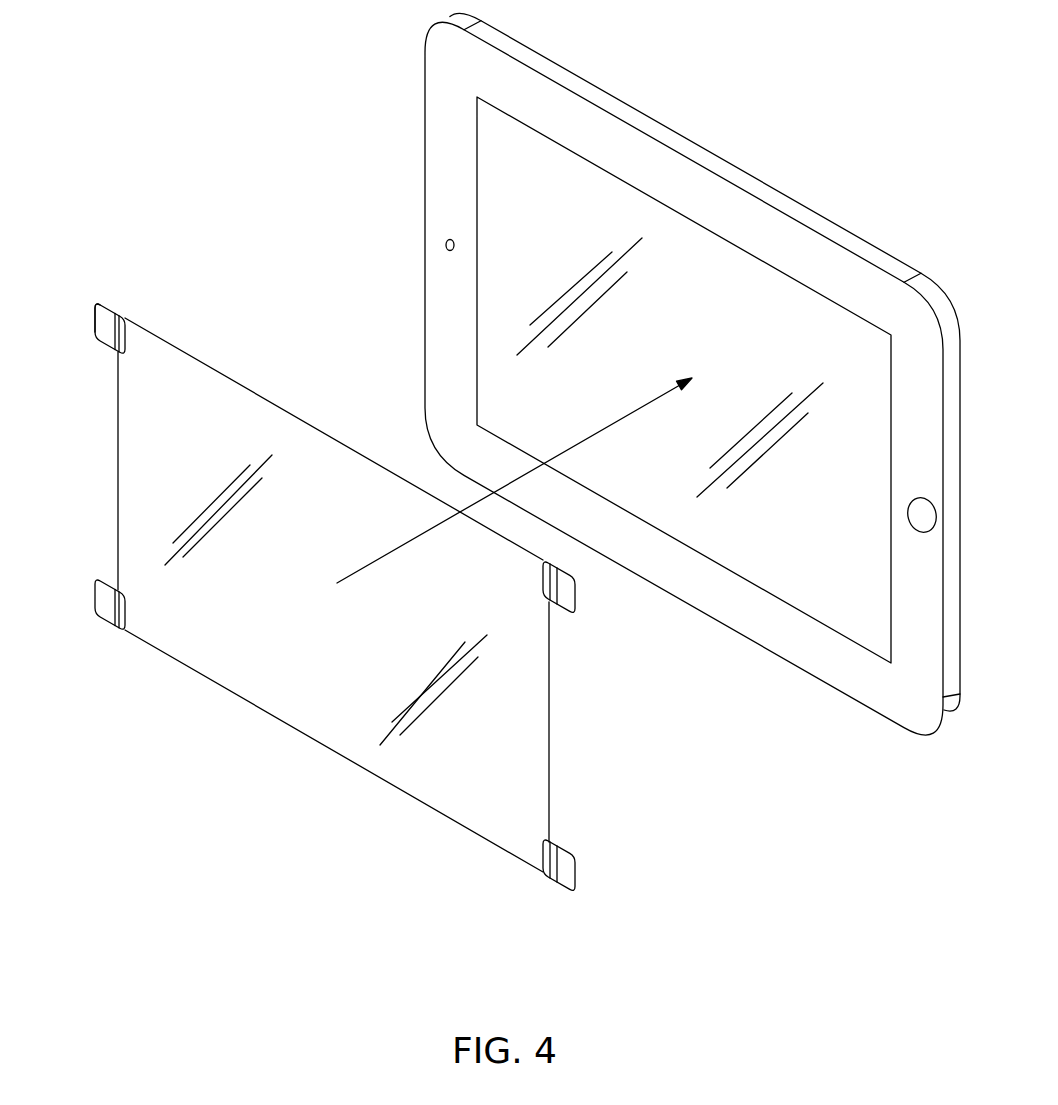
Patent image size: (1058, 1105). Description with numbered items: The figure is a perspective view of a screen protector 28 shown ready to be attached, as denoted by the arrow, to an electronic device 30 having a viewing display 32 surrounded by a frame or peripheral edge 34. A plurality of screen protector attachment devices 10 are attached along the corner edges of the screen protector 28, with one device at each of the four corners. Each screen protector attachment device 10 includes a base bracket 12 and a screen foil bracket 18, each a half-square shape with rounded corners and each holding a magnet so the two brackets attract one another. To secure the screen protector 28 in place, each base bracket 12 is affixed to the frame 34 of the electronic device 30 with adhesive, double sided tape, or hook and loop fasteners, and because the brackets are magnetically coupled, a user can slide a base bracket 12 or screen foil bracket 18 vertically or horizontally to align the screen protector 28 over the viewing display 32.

The screen protector attachment device 10 is at (105, 306).
The base bracket 12 is at (100, 330).
The screen foil bracket 18 is at (124, 316).
The screen protector 28 is at (322, 748).
The electronic device 30 is at (692, 374).
The viewing display 32 is at (523, 167).
The frame or peripheral edge 34 is at (802, 248).